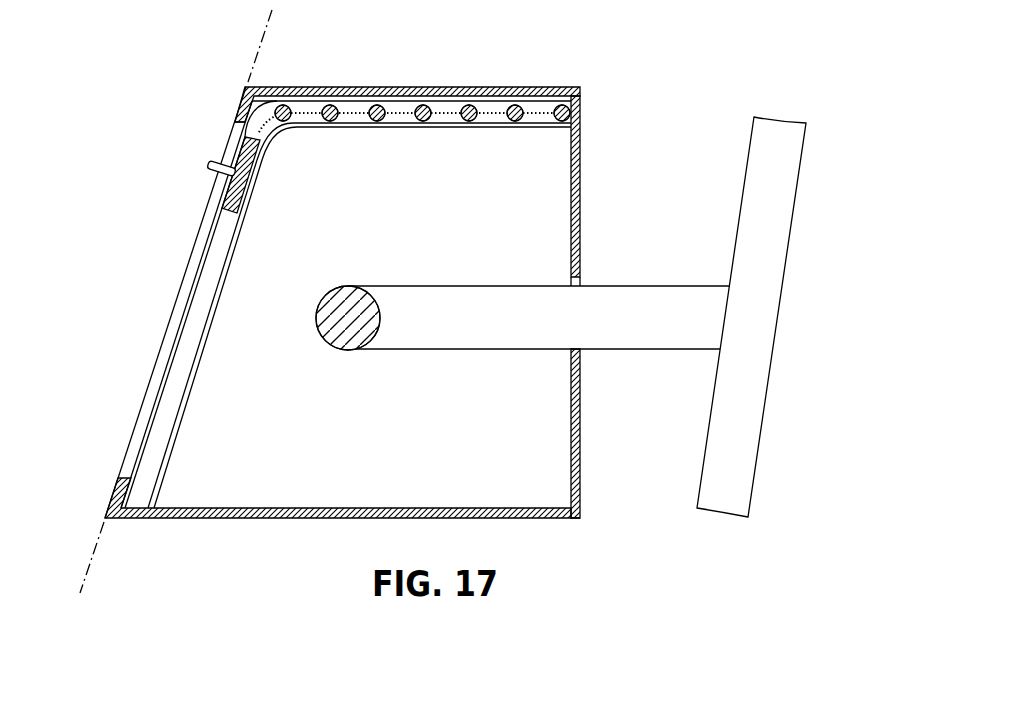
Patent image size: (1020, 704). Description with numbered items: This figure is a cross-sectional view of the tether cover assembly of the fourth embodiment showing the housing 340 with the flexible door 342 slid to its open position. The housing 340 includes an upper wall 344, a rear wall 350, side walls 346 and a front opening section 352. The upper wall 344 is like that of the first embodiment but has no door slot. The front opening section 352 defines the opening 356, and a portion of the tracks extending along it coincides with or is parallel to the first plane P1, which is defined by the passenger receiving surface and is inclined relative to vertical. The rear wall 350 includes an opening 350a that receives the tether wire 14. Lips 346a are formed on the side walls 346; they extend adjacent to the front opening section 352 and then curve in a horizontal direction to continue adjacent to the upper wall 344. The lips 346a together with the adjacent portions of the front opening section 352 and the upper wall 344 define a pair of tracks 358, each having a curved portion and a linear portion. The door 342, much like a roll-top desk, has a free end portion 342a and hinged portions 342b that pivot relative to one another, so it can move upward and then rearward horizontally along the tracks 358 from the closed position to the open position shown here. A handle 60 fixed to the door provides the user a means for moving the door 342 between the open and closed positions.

The first plane P1 is at (264, 24).
The tether wire 14 is at (469, 320).
The handle 60 is at (208, 163).
The housing 340 is at (358, 273).
The door 342 is at (362, 304).
The free end portion 342a is at (238, 194).
The hinged portions 342b is at (324, 121).
The upper wall 344 is at (345, 87).
The side walls 346 is at (526, 460).
The lips 346a is at (484, 128).
The rear wall 350 is at (581, 412).
The opening 350a is at (580, 352).
The front opening section 352 is at (133, 429).
The opening 356 is at (182, 278).
The tracks 358 is at (179, 368).